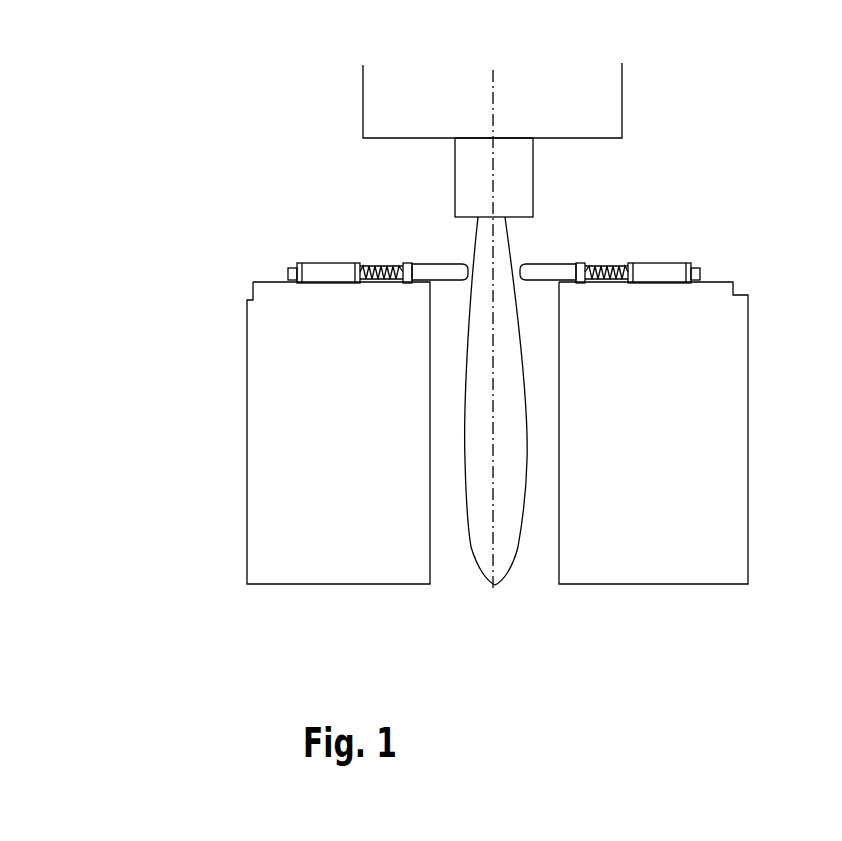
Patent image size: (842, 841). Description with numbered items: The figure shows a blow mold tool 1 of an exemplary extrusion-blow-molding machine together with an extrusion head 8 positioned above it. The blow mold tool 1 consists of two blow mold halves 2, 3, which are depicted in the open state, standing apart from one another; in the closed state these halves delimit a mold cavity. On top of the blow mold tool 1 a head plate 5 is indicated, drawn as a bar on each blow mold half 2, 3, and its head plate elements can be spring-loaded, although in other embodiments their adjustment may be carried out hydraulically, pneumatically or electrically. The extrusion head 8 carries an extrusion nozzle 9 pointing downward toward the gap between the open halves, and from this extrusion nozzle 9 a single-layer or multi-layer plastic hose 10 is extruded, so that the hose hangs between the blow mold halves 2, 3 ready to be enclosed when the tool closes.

The blow mold tool 1 is at (245, 230).
The blow mold half 2 is at (255, 513).
The blow mold half 3 is at (732, 482).
The head plate 5 is at (432, 270).
The extrusion head 8 is at (612, 79).
The extrusion nozzle 9 is at (465, 170).
The plastic hose 10 is at (503, 555).